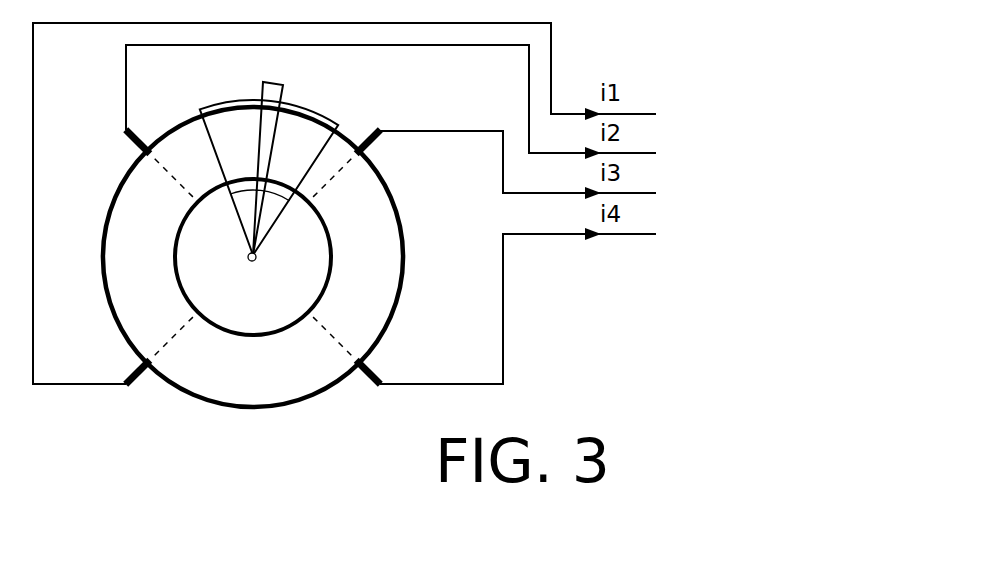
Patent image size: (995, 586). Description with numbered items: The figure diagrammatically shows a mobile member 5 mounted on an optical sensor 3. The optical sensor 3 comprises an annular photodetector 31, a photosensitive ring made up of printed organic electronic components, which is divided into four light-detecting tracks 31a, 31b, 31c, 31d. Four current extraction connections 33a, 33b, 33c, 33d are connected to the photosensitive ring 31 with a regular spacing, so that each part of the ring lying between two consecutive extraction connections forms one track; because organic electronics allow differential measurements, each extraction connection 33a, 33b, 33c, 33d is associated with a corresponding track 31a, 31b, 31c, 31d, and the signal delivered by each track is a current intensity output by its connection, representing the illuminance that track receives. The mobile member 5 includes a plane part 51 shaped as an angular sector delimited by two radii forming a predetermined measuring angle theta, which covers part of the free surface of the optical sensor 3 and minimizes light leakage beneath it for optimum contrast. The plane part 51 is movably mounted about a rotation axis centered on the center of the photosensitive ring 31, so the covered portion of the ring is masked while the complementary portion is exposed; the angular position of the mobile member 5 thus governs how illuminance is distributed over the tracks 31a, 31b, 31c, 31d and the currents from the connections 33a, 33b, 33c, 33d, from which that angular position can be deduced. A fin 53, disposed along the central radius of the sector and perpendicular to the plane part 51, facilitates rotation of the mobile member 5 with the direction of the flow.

The optical sensor 3 is at (92, 466).
The mobile member 5 is at (285, 163).
The plane part 51 is at (228, 101).
The fin 53 is at (275, 82).
The annular photodetector 31 is at (271, 283).
The light-detecting track 31a is at (120, 288).
The light-detecting track 31b is at (352, 146).
The light-detecting track 31c is at (378, 258).
The light-detecting track 31d is at (234, 386).
The current extraction connection 33a is at (127, 141).
The current extraction connection 33b is at (378, 143).
The current extraction connection 33c is at (376, 365).
The current extraction connection 33d is at (144, 382).